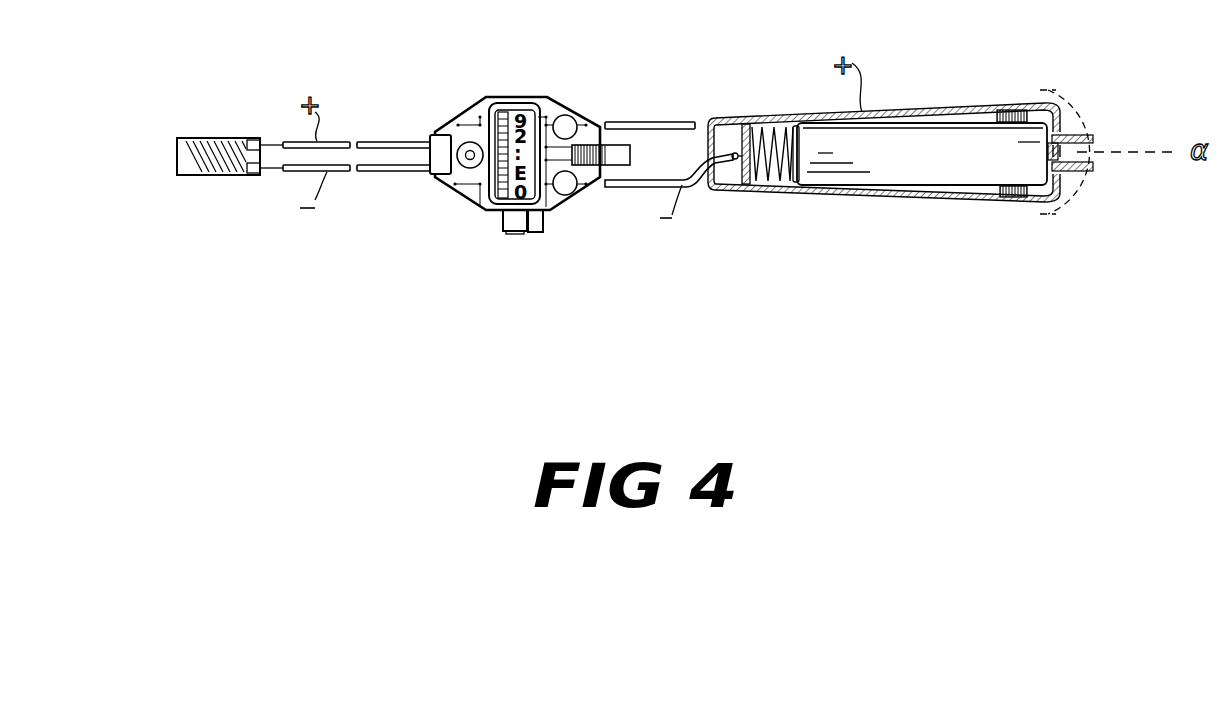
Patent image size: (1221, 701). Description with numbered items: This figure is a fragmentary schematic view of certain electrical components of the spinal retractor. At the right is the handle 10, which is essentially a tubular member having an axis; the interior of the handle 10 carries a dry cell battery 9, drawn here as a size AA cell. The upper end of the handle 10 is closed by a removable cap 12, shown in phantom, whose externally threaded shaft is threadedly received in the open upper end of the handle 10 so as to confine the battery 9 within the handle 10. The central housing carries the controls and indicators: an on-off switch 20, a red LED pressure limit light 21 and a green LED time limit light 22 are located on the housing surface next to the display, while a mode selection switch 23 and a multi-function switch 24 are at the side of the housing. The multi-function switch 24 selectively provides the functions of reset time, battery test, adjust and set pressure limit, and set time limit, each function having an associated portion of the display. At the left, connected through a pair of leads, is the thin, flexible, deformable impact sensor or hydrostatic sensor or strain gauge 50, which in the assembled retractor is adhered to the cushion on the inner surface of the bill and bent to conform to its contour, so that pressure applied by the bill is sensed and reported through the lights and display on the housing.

The strain gauge 50 is at (220, 136).
The red LED pressure limit light 21 is at (565, 116).
The on-off switch 20 is at (623, 152).
The green LED time limit light 22 is at (573, 191).
The mode selection switch 23 is at (515, 235).
The multi-function switch 24 is at (537, 234).
The handle 10 is at (973, 104).
The dry cell battery 9 is at (865, 172).
The removable cap 12 is at (1090, 117).